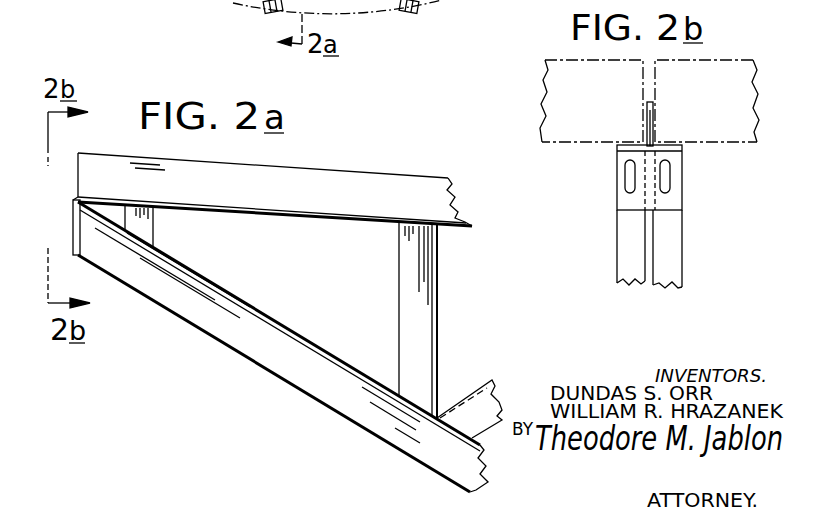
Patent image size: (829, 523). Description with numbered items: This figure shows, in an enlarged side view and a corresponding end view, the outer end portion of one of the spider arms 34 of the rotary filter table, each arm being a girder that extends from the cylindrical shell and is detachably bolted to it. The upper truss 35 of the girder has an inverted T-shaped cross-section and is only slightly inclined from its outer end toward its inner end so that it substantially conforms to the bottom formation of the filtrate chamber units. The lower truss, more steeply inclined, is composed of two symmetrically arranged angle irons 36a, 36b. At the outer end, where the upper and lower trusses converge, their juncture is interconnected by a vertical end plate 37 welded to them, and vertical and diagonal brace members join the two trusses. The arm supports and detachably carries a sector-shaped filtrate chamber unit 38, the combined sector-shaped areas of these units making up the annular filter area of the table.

In FIG. 2A, the spider arm 34 is at (250, 300).
In FIG. 2A, the upper truss 35 is at (343, 183).
In FIG. 2B, the upper truss 35 is at (651, 128).
In FIG. 2B, the angle iron 36a is at (628, 258).
In FIG. 2B, the angle iron 36b is at (675, 255).
In FIG. 2A, the vertical end plate 37 is at (73, 206).
In FIG. 2B, the vertical end plate 37 is at (622, 198).
In FIG. 2B, the sector-shaped filtrate chamber unit 38 is at (553, 82).